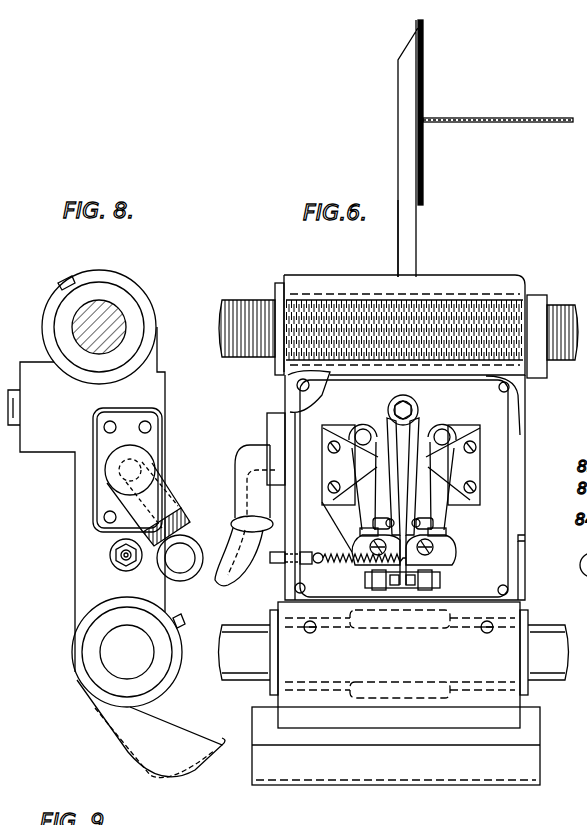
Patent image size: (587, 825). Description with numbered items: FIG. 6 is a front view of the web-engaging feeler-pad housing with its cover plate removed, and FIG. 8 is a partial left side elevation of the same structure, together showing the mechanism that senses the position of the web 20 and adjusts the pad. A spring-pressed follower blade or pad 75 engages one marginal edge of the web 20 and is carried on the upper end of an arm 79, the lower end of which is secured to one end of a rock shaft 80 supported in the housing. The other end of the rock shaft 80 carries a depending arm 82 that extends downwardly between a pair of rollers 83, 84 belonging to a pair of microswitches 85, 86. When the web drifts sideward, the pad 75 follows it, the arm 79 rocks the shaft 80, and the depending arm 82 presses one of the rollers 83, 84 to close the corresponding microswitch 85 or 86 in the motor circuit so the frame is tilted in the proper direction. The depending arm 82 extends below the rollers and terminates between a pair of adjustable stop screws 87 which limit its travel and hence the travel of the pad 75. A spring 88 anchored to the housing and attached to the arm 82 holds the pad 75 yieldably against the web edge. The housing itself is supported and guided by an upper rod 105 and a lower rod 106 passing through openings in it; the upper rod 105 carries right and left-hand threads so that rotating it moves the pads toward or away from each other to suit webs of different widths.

In FIG. 6, the web 20 is at (543, 118).
In FIG. 6, the follower blade or pad 75 is at (414, 32).
In FIG. 6, the arm 79 is at (410, 248).
In FIG. 6, the rock shaft 80 is at (418, 410).
In FIG. 6, the depending arm 82 is at (385, 420).
In FIG. 6, the roller 83 is at (418, 533).
In FIG. 6, the roller 84 is at (350, 541).
In FIG. 6, the microswitch 85 is at (470, 505).
In FIG. 6, the microswitch 86 is at (332, 505).
In FIG. 6, the adjustable stop screws 87 is at (415, 588).
In FIG. 6, the spring 88 is at (343, 561).
In FIG. 8, the upper rod 105 is at (105, 306).
In FIG. 6, the upper rod 105 is at (560, 305).
In FIG. 8, the lower rod 106 is at (108, 648).
In FIG. 6, the lower rod 106 is at (546, 635).